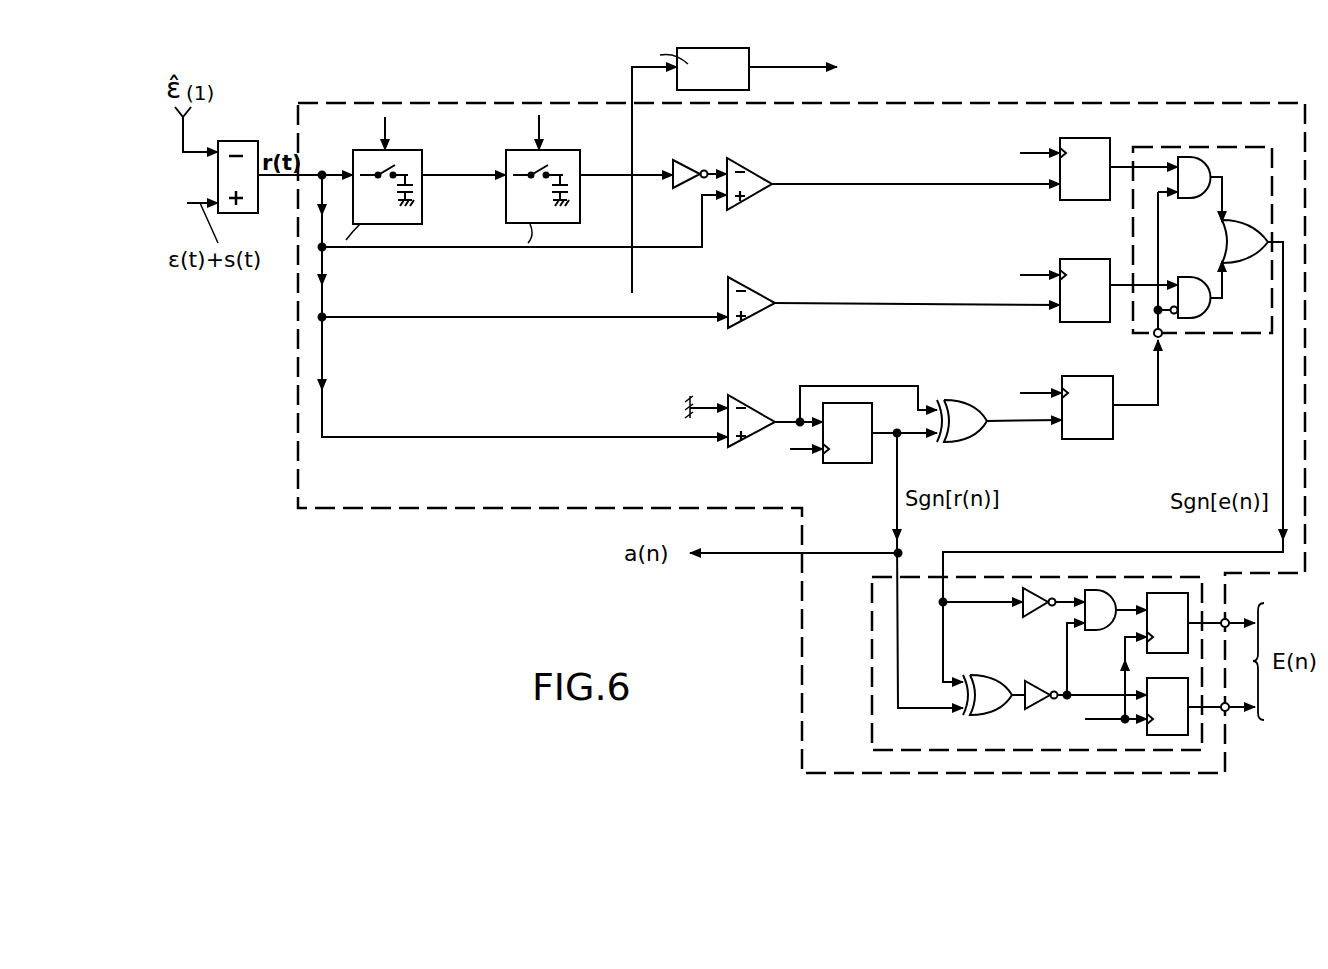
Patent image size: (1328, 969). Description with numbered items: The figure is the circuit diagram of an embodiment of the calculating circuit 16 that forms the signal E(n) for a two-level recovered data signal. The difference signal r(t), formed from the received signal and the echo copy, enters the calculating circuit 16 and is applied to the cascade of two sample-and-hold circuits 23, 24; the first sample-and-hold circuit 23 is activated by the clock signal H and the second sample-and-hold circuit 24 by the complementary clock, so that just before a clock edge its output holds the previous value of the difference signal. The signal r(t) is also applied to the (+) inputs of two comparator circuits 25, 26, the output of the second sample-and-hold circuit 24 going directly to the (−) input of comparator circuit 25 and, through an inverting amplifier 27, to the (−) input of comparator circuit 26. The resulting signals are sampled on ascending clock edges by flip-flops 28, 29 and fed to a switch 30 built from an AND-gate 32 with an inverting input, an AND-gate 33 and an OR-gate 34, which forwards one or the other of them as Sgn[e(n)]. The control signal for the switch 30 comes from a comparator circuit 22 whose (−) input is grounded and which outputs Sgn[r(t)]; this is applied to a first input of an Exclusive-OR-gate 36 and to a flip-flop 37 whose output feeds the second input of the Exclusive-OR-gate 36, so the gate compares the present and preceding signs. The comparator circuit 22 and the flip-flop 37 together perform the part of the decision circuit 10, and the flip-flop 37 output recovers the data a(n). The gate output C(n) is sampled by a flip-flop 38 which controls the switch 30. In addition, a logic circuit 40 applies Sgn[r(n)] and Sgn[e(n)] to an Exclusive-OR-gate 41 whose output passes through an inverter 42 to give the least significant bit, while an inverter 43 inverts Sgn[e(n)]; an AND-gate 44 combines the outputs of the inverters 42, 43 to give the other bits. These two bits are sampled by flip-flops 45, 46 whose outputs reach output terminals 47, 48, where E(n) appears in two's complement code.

The decision circuit 10 is at (749, 64).
The calculating circuit 16 is at (972, 103).
The comparator circuit 22 is at (758, 414).
The sample-and-hold circuit 23 is at (445, 196).
The sample-and-hold circuit 24 is at (600, 194).
The comparator circuit 25 is at (746, 292).
The comparator circuit 26 is at (752, 168).
The inverting amplifier 27 is at (688, 165).
The flip-flop 28 is at (1090, 259).
The flip-flop 29 is at (1093, 138).
The switch 30 is at (1165, 147).
The AND-gate 32 is at (1195, 275).
The AND-gate 33 is at (1195, 165).
The OR-gate 34 is at (1240, 250).
The Exclusive-OR-gate 36 is at (976, 400).
The flip-flop 37 is at (858, 465).
The flip-flop 38 is at (1113, 428).
The logic circuit 40 is at (872, 658).
The Exclusive-OR-gate 41 is at (997, 673).
The inverter 42 is at (1040, 706).
The inverter 43 is at (1045, 617).
The AND-gate 44 is at (1100, 628).
The flip-flop 45 is at (1152, 735).
The flip-flop 46 is at (1160, 593).
The output terminal 47 is at (1228, 710).
The output terminal 48 is at (1228, 619).